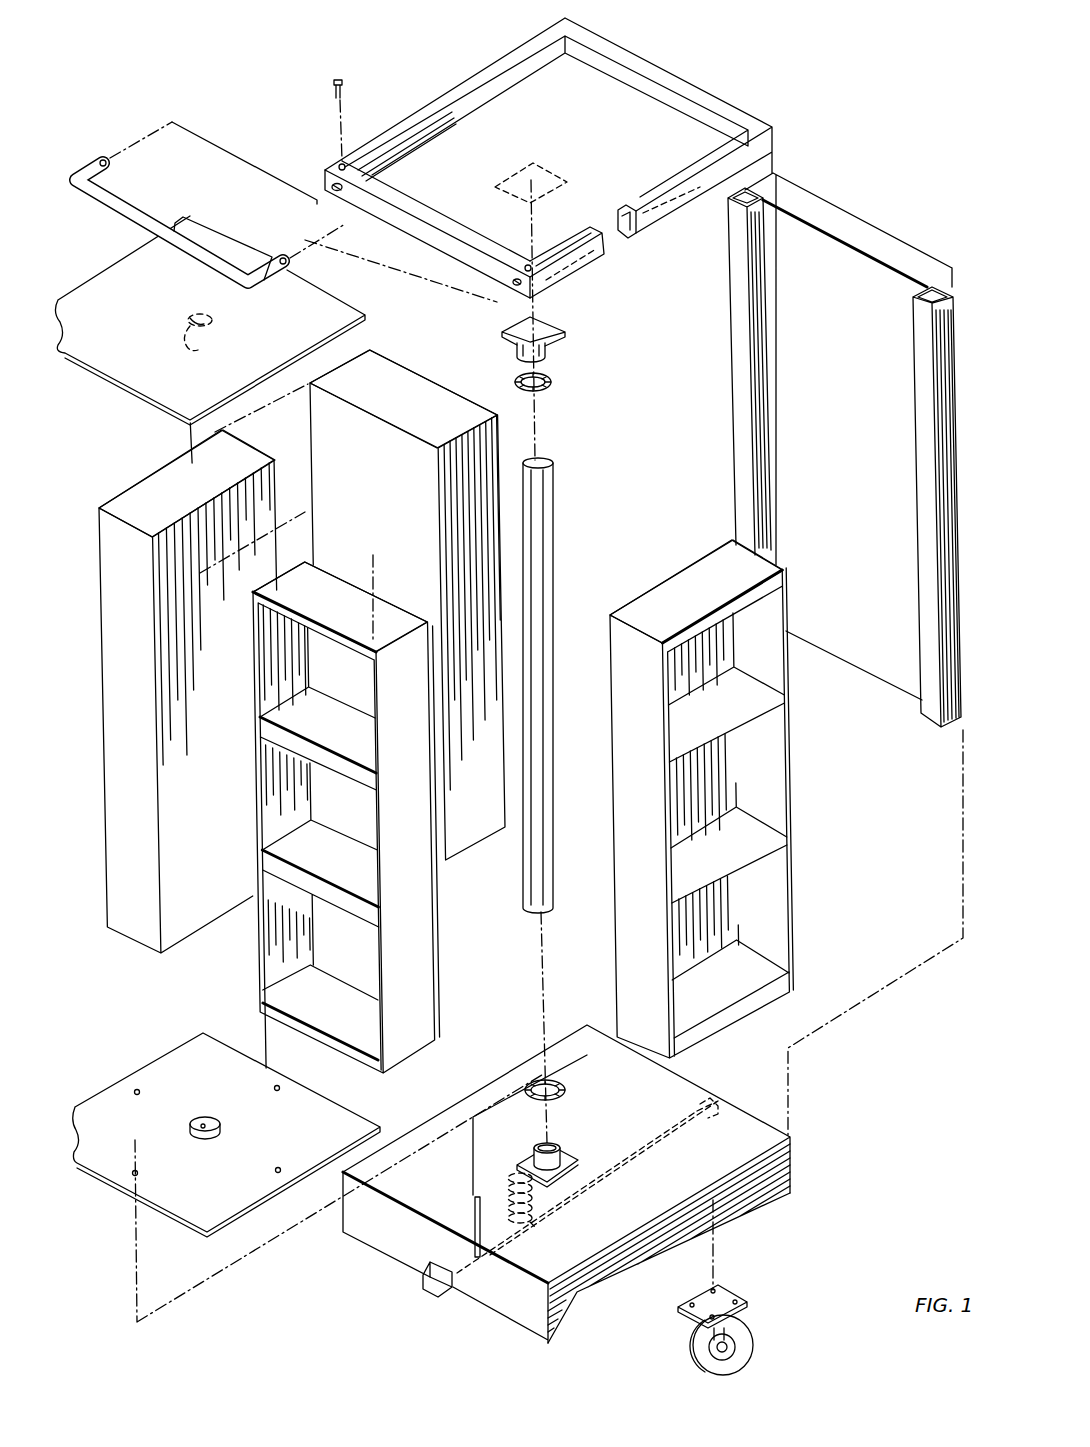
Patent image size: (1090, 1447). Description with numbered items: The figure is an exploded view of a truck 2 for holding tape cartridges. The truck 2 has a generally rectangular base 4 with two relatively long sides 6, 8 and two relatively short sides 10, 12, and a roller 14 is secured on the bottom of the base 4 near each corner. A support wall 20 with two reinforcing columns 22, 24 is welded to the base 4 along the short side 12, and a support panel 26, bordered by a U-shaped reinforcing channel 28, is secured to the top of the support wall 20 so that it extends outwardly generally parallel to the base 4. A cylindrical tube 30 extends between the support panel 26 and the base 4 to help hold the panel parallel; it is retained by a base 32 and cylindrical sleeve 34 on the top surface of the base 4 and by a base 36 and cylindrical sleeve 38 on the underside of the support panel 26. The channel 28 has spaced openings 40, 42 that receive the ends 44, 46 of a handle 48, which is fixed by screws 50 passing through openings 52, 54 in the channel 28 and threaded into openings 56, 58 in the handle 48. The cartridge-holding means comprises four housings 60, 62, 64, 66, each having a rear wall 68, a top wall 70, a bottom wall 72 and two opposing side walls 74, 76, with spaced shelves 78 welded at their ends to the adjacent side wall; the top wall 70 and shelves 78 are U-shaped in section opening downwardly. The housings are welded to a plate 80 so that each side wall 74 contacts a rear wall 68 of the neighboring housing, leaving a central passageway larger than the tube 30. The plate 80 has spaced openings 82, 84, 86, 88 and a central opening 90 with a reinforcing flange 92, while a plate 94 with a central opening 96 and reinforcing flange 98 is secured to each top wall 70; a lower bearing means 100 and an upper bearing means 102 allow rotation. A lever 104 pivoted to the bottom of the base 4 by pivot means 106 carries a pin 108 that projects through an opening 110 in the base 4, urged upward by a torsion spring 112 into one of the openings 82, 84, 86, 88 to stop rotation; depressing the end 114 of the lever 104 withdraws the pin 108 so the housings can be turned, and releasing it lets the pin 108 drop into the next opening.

The truck 2 is at (848, 1081).
The base 4 is at (655, 1186).
The relatively long side 6 is at (743, 1178).
The relatively long side 8 is at (500, 1078).
The relatively short side 10 is at (534, 1290).
The relatively short side 12 is at (717, 1094).
The roller 14 is at (759, 1328).
The support wall 20 is at (828, 388).
The reinforcing column 22 is at (726, 392).
The reinforcing column 24 is at (924, 452).
The support panel 26 is at (628, 158).
The U-shaped reinforcing channel 28 is at (626, 237).
The cylindrical tube 30 is at (556, 532).
The base 32 is at (562, 1158).
The cylindrical sleeve 34 is at (560, 1152).
The base 36 is at (550, 328).
The cylindrical sleeve 38 is at (548, 348).
The opening 40 is at (326, 186).
The opening 42 is at (514, 285).
The end of handle 44 is at (218, 207).
The end of handle 46 is at (280, 272).
The handle 48 is at (128, 220).
The screw 50 is at (332, 90).
The opening 52 is at (344, 162).
The opening 54 is at (531, 266).
The opening 56 is at (101, 160).
The opening 58 is at (290, 263).
The housing 60 is at (796, 802).
The housing 62 is at (448, 910).
The housing 64 is at (178, 955).
The housing 66 is at (430, 376).
The rear wall 68 is at (383, 528).
The top wall 70 is at (411, 418).
The bottom wall 72 is at (466, 848).
The side wall 74 is at (280, 478).
The side wall 76 is at (302, 468).
The shelf 78 is at (313, 738).
The plate 80 is at (206, 1090).
The opening 82 is at (280, 1086).
The opening 84 is at (278, 1174).
The opening 86 is at (130, 1178).
The opening 88 is at (136, 1088).
The central opening 90 is at (203, 1134).
The reinforcing flange 92 is at (222, 1128).
The plate 94 is at (160, 295).
The central opening 96 is at (206, 320).
The reinforcing flange 98 is at (203, 345).
The lower bearing means 100 is at (566, 1088).
The upper bearing means 102 is at (552, 380).
The lever 104 is at (600, 1180).
The pivot means 106 is at (726, 1123).
The pin 108 is at (472, 1202).
The opening 110 is at (481, 1196).
The torsion spring 112 is at (538, 1228).
The end of lever 114 is at (422, 1290).